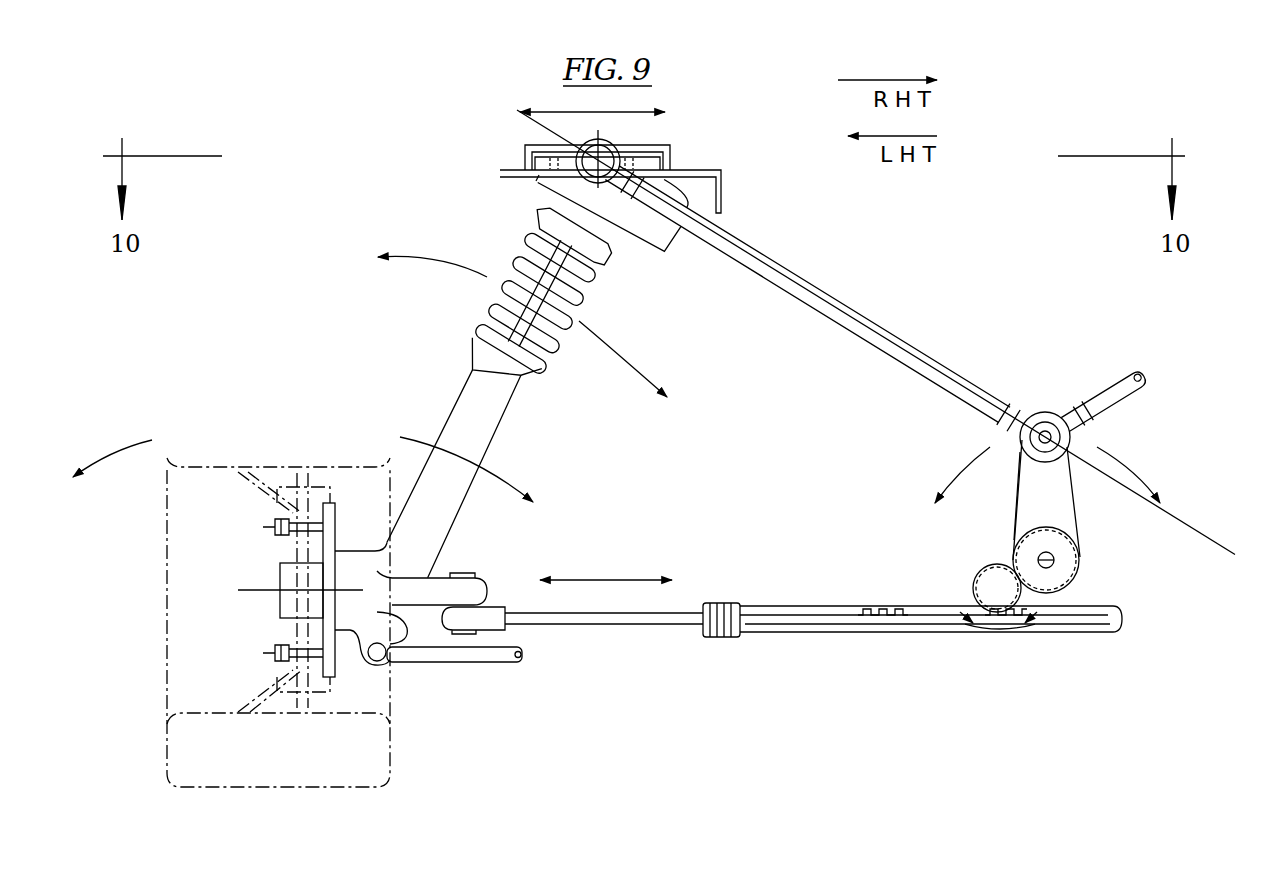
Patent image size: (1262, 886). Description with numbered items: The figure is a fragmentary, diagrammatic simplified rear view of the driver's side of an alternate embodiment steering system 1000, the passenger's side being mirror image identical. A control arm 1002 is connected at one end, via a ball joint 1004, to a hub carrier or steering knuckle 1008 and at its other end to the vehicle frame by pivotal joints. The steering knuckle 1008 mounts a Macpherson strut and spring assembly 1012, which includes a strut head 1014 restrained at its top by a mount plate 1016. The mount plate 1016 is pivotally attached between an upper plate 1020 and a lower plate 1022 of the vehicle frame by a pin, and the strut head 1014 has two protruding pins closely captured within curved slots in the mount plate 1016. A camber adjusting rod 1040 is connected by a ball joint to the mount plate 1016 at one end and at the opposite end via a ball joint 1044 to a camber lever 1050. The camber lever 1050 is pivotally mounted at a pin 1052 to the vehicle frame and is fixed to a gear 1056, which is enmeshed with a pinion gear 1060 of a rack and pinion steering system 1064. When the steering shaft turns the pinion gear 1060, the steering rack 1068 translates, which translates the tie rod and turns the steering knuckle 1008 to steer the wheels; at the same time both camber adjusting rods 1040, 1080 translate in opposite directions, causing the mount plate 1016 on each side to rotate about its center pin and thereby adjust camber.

The steering system 1000 is at (840, 276).
The control arm 1002 is at (477, 665).
The ball joint 1004 is at (389, 663).
The steering knuckle 1008 is at (374, 598).
The Macpherson strut and spring assembly 1012 is at (522, 407).
The strut head 1014 is at (672, 240).
The mount plate 1016 is at (647, 157).
The upper plate 1020 is at (537, 145).
The lower plate 1022 is at (728, 186).
The camber adjusting rod 1040 is at (871, 312).
The ball joint 1044 is at (1037, 415).
The camber lever 1050 is at (1077, 497).
The pin 1052 is at (1047, 560).
The gear 1056 is at (1047, 520).
The pinion gear 1060 is at (975, 584).
The rack and pinion steering system 1064 is at (906, 637).
The steering rack 1068 is at (806, 627).
The camber adjusting rod 1080 is at (1117, 375).